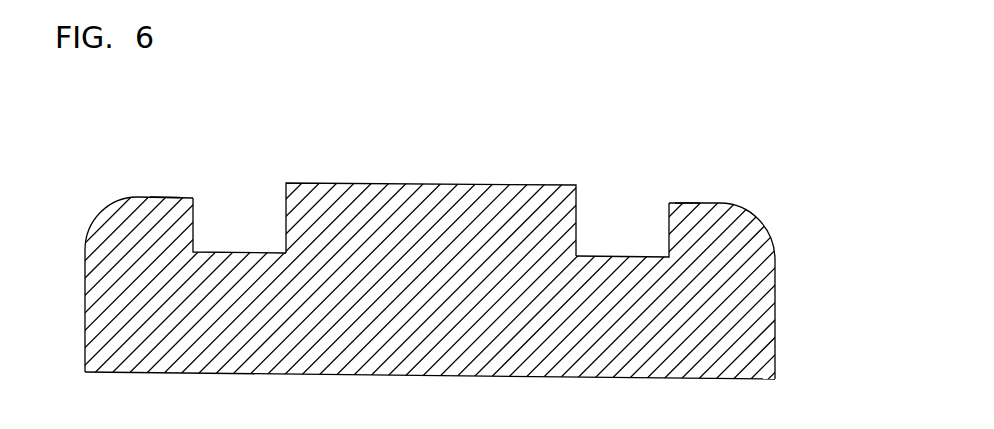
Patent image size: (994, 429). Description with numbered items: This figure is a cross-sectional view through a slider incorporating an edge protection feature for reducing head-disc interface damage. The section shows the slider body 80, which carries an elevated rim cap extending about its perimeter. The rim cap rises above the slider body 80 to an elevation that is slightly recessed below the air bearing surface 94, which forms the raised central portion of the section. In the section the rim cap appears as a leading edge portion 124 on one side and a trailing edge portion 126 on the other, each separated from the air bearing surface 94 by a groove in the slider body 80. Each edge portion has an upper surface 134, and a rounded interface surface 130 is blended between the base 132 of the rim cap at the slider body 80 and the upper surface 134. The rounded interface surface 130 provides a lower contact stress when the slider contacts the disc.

The air bearing surface 94 is at (342, 182).
The slider body 80 is at (228, 250).
The trailing edge portion 126 is at (168, 193).
The leading edge portion 124 is at (705, 200).
The upper surface 134 is at (165, 195).
The rounded interface surface 130 is at (107, 213).
The base 132 is at (85, 262).